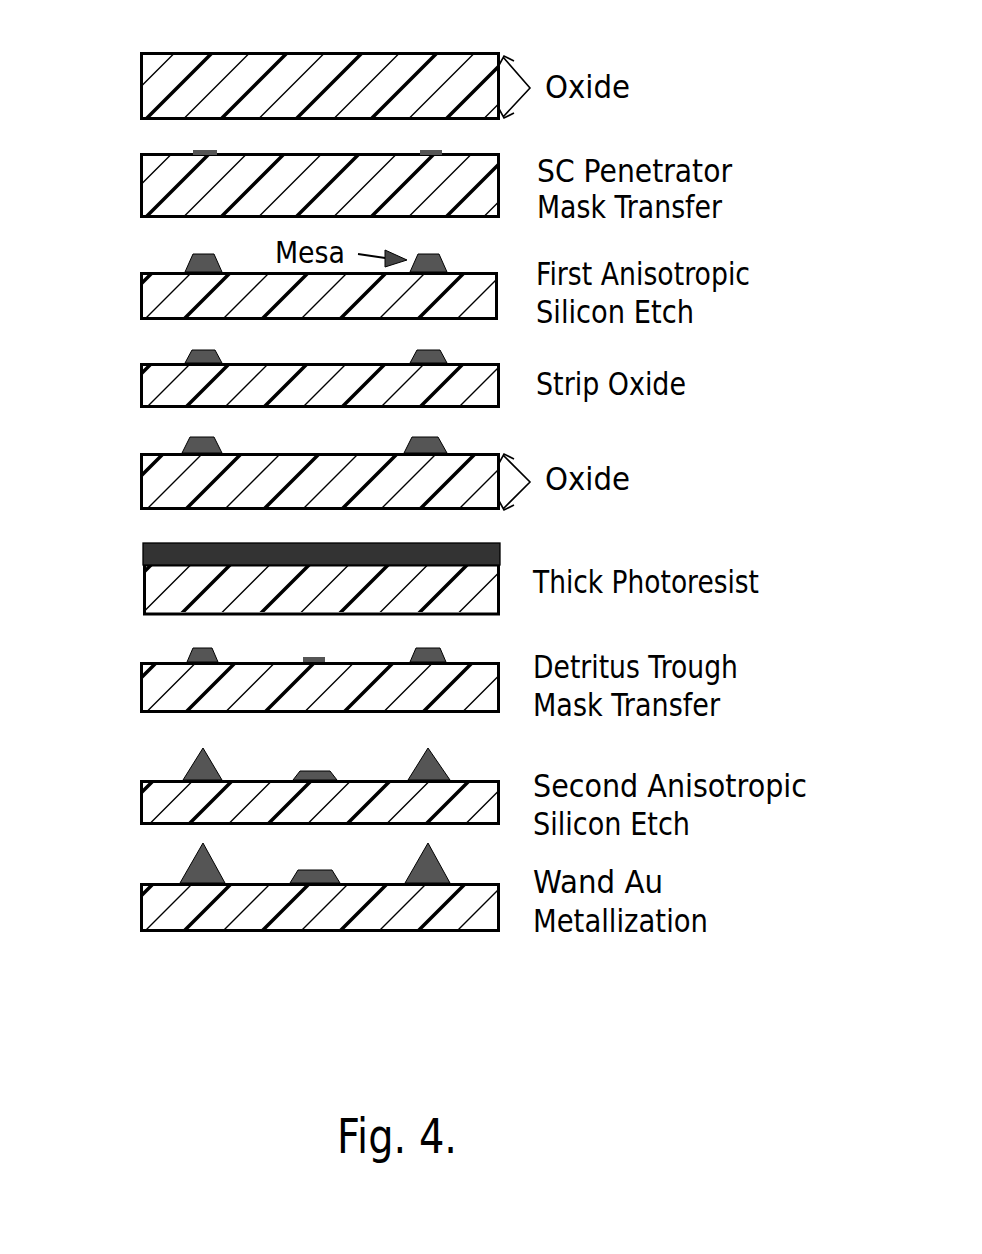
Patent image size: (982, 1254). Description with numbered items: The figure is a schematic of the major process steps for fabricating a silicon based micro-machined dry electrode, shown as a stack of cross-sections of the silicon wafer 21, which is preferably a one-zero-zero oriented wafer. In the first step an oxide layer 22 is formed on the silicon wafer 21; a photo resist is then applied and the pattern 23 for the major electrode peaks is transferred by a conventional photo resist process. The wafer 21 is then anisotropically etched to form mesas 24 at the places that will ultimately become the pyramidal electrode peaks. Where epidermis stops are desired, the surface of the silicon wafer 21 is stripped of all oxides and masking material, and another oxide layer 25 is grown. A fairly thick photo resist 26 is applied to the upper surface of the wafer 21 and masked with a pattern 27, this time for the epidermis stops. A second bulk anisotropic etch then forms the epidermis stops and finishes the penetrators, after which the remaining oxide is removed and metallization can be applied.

The silicon wafer 21 is at (197, 80).
The oxide layer 22 is at (128, 59).
The pattern 23 is at (207, 145).
The mesas 24 is at (213, 252).
The oxide layer 25 is at (128, 452).
The thick photo resist 26 is at (140, 555).
The pattern 27 is at (315, 658).